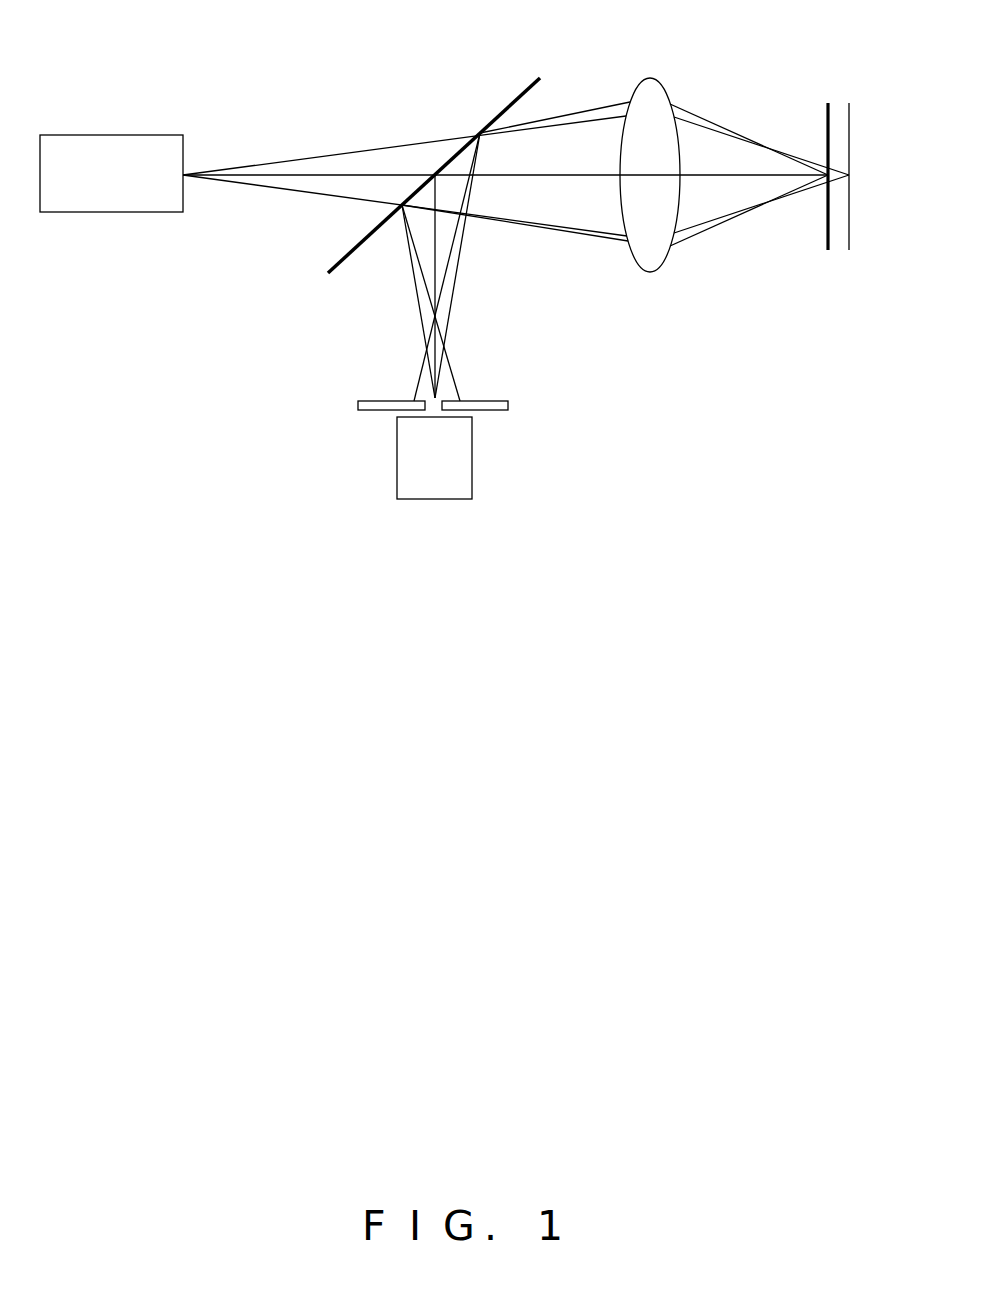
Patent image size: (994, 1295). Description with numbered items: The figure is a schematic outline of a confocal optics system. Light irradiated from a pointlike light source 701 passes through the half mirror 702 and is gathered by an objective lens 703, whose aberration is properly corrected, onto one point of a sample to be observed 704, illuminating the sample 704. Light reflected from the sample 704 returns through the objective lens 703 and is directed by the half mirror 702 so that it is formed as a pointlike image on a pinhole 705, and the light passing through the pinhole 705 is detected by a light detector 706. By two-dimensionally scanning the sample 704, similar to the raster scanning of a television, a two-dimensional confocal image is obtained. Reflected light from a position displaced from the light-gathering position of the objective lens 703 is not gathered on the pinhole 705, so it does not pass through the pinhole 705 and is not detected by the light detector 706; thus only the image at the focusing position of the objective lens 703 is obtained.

The pointlike light source 701 is at (145, 134).
The half mirror 702 is at (489, 126).
The objective lens 703 is at (663, 263).
The sample to be observed 704 is at (825, 220).
The pinhole 705 is at (380, 411).
The light detector 706 is at (472, 472).